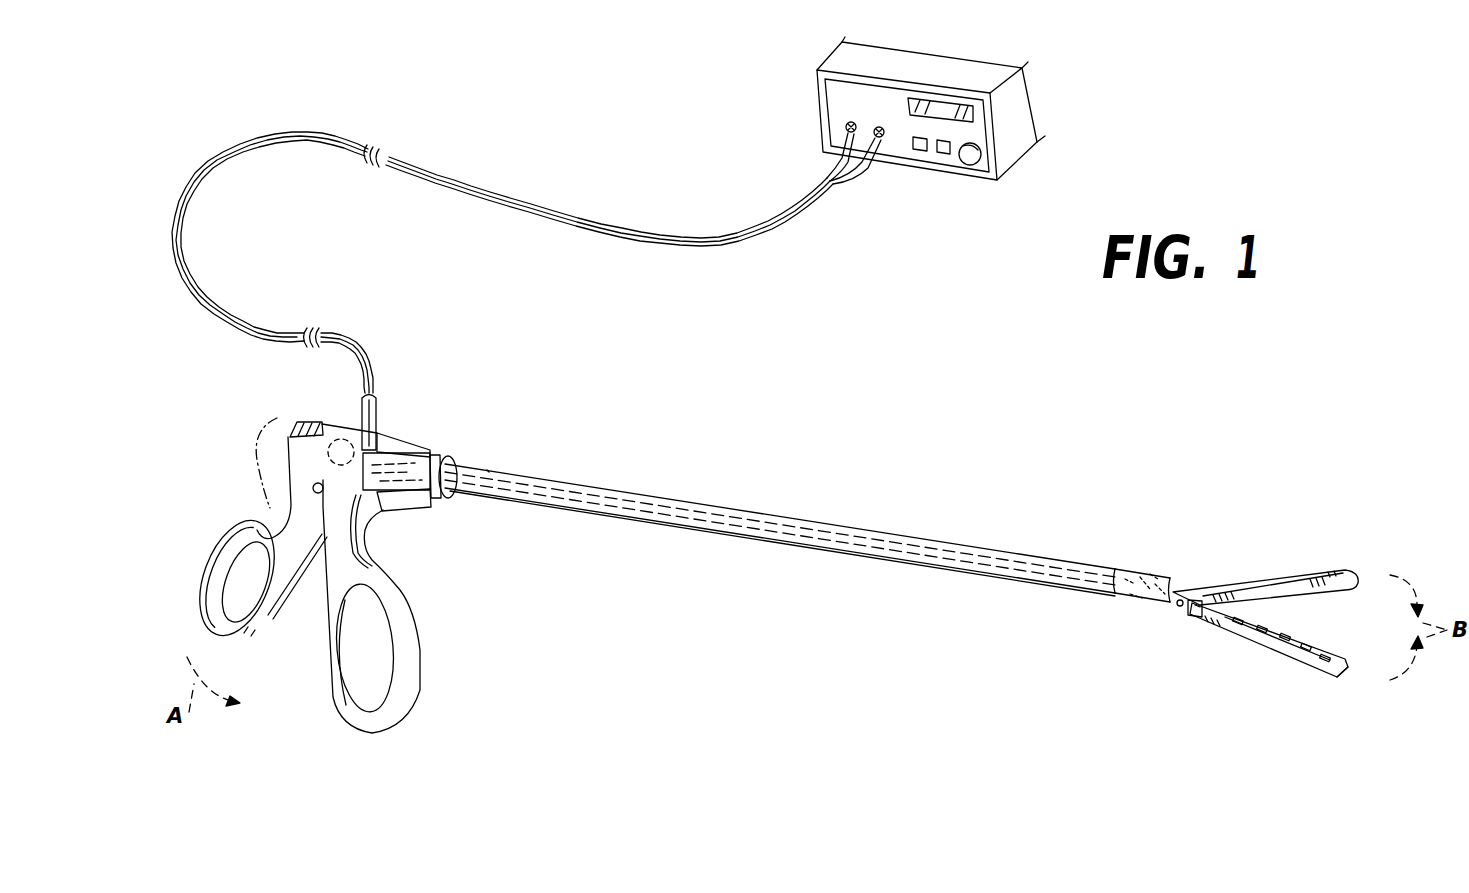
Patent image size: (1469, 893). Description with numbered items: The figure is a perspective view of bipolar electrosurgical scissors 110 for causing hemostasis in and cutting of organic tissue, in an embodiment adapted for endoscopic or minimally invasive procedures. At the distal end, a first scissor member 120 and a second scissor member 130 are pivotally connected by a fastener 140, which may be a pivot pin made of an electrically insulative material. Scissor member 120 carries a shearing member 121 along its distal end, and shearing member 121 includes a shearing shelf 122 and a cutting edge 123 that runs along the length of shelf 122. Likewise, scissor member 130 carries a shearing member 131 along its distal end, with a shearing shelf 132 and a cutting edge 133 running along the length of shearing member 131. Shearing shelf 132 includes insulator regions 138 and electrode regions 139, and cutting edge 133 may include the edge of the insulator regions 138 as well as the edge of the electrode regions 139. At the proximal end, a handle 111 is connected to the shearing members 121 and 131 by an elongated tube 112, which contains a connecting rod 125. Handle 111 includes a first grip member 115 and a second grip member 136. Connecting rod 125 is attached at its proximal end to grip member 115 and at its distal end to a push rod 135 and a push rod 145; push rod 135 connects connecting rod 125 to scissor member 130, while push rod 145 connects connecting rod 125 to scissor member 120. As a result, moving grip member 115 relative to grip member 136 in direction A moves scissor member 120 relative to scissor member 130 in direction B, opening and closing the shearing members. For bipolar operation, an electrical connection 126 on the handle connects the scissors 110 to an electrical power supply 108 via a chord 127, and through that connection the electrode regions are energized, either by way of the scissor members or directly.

The electrical power supply 108 is at (833, 103).
The bipolar electrosurgical scissors 110 is at (912, 470).
The handle 111 is at (295, 459).
The elongated tube 112 is at (687, 498).
The first grip member 115 is at (262, 623).
The first scissor member 120 is at (1195, 590).
The shearing member 121 is at (1273, 595).
The shearing shelf 122 is at (1361, 582).
The cutting edge 123 is at (1356, 578).
The connecting rod 125 is at (487, 470).
The electrical connection 126 is at (380, 410).
The chord 127 is at (755, 240).
The second scissor member 130 is at (1200, 613).
The shearing member 131 is at (1333, 678).
The shearing shelf 132 is at (1297, 648).
The cutting edge 133 is at (1215, 612).
The push rod 135 is at (1140, 575).
The second grip member 136 is at (413, 708).
The insulator regions 138 is at (1222, 613).
The electrode regions 139 is at (1240, 622).
The fastener 140 is at (1176, 605).
The push rod 145 is at (1140, 575).